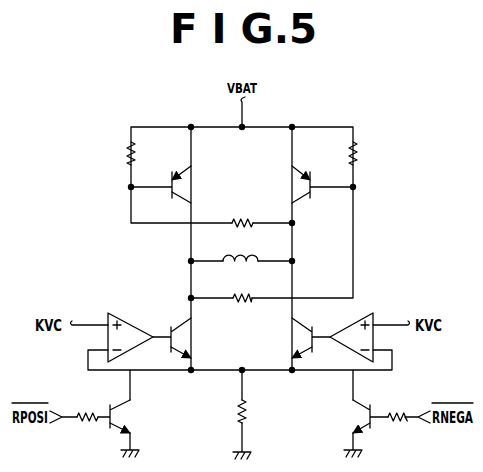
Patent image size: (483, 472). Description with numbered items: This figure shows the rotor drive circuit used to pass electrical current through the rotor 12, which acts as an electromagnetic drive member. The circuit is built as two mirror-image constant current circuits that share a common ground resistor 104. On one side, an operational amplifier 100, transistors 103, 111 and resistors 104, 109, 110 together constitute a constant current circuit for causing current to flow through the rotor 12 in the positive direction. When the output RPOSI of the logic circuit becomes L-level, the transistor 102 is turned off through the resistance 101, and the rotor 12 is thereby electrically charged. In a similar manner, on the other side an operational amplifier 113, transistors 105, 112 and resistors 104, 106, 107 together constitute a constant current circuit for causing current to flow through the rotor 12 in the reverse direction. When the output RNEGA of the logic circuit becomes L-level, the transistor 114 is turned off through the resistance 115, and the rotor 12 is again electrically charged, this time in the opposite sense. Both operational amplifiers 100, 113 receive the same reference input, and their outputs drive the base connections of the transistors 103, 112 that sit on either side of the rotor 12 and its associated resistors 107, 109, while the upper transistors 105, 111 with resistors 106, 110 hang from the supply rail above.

The rotor 12 is at (256, 256).
The operational amplifier 100 is at (133, 318).
The resistance 101 is at (85, 423).
The transistor 102 is at (120, 413).
The transistor 103 is at (178, 338).
The resistor 104 is at (251, 411).
The transistor 105 is at (183, 184).
The resistor 106 is at (139, 150).
The resistor 107 is at (250, 218).
The resistor 109 is at (250, 293).
The resistor 110 is at (362, 160).
The transistor 111 is at (312, 196).
The transistor 112 is at (305, 338).
The operational amplifier 113 is at (352, 318).
The transistor 114 is at (372, 430).
The resistance 115 is at (397, 413).